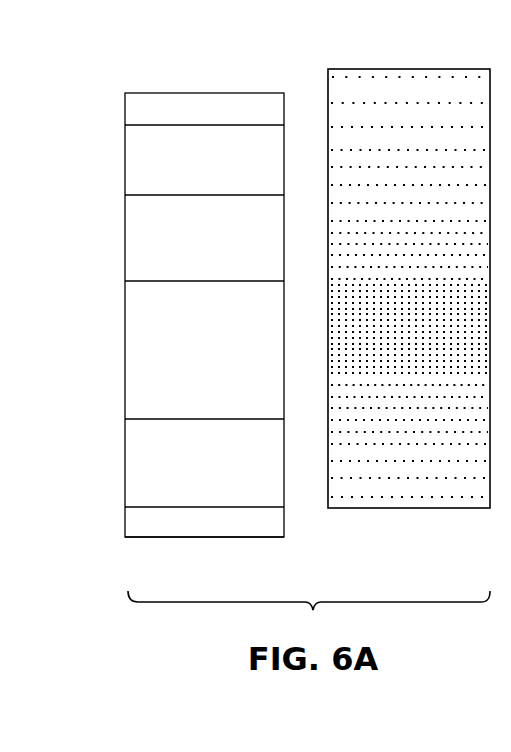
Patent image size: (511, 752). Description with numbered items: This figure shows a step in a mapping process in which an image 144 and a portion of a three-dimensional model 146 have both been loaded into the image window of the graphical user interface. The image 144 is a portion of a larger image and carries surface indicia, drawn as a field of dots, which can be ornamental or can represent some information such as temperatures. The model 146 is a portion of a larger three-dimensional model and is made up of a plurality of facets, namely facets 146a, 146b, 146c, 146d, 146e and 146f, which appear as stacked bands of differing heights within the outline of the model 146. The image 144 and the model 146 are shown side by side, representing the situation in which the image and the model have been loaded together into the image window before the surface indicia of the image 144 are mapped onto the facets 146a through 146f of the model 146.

The model 146 is at (213, 93).
The facet 146a is at (125, 110).
The facet 146b is at (125, 165).
The facet 146c is at (125, 241).
The facet 146d is at (125, 348).
The facet 146e is at (125, 468).
The facet 146f is at (125, 527).
The image 144 is at (400, 69).